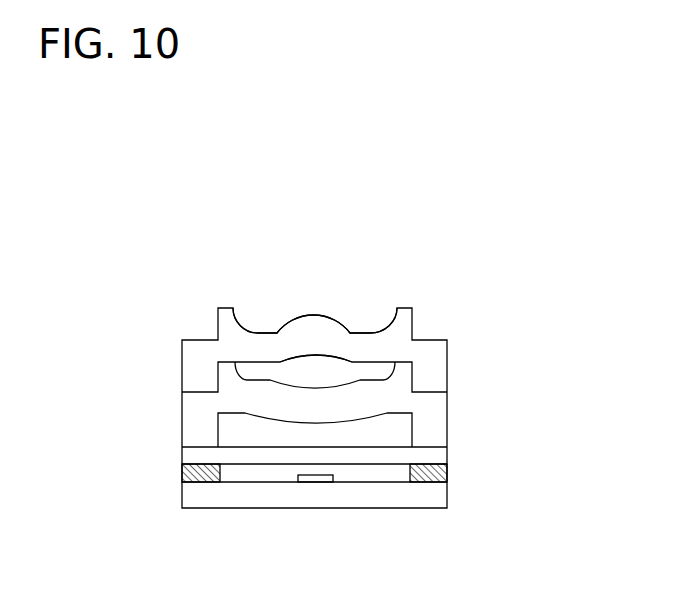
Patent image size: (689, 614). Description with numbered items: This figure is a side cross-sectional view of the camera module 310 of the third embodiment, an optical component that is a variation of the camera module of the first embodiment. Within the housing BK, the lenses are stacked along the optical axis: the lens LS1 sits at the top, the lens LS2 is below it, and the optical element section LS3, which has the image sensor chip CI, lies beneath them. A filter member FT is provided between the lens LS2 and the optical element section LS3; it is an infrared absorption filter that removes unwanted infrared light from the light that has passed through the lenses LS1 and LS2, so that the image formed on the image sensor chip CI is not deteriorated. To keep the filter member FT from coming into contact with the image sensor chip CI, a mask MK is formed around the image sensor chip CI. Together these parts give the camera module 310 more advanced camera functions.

The camera module 310 is at (621, 104).
The lens barrel / holder BK is at (197, 338).
The lens LS1 is at (283, 305).
The lens LS2 is at (280, 377).
The optical element section LS3 is at (252, 478).
The filter member FT is at (432, 455).
The mask MK is at (182, 472).
The image sensor chip CI is at (300, 475).